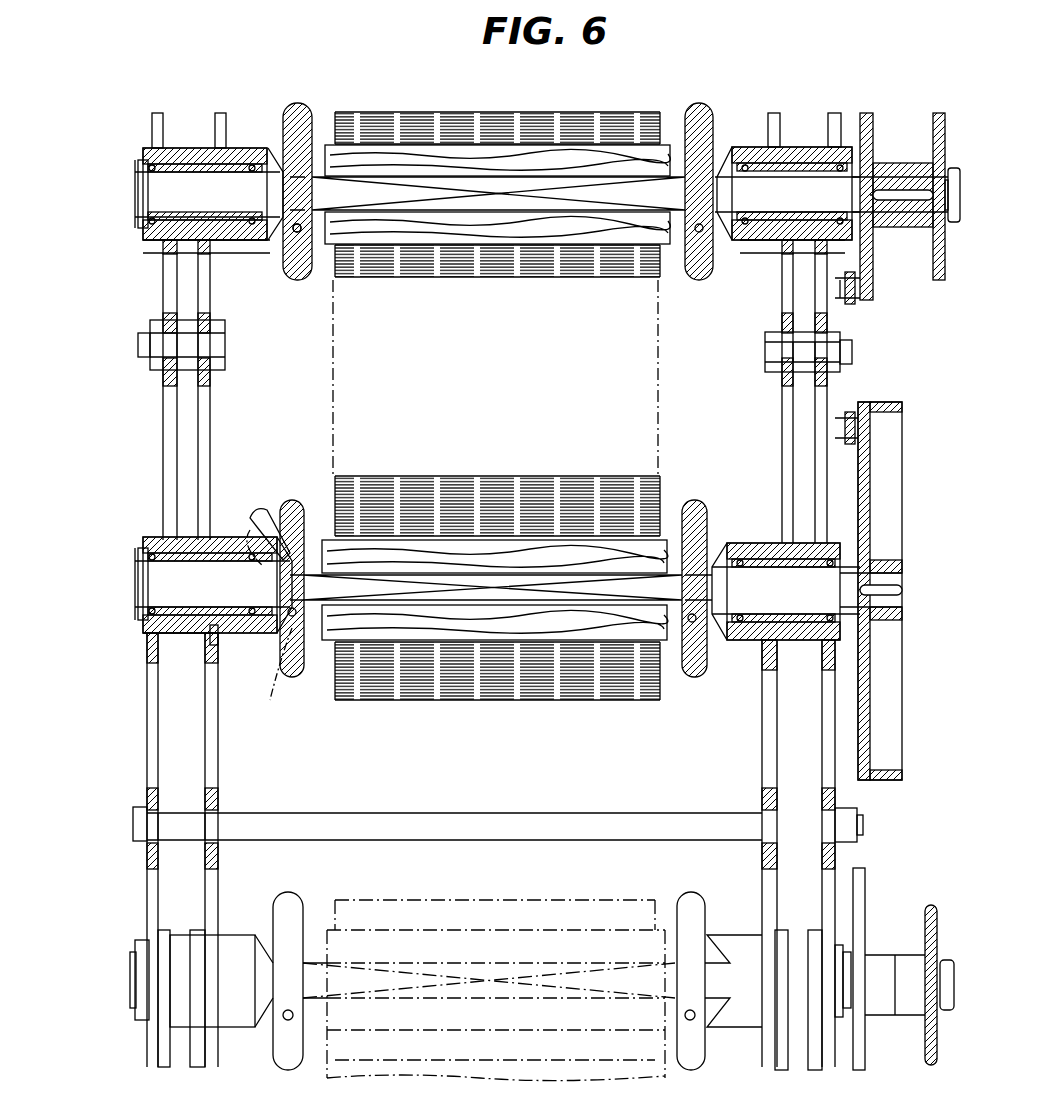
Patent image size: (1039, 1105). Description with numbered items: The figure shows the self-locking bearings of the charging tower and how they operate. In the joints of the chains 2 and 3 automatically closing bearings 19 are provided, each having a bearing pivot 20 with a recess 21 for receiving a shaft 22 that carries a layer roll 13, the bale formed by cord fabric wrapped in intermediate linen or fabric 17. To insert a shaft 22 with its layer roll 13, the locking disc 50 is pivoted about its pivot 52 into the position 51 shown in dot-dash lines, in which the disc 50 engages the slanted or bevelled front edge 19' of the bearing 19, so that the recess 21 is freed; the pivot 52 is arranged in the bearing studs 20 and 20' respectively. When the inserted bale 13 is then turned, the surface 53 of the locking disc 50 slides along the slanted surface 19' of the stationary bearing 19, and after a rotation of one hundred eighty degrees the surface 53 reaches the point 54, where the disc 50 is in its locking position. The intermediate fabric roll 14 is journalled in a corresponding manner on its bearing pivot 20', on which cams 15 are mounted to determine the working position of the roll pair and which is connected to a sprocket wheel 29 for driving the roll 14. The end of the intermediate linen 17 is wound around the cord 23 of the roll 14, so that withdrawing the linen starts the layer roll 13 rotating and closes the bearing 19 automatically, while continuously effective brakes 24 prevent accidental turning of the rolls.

The chain 2 is at (835, 113).
The chain 3 is at (220, 113).
The layer roll 13 is at (547, 488).
The intermediate fabric roll 14 is at (597, 262).
The cam 15 is at (952, 225).
The intermediate linen or fabric 17 is at (638, 383).
The automatically closing bearing 19 is at (497, 630).
The slanted or bevelled front edge 19' is at (525, 530).
The bearing pivot 20 is at (908, 572).
The bearing pivot 20' is at (900, 133).
The recess 21 is at (703, 566).
The shaft 22 is at (640, 592).
The cord or core 23 is at (672, 225).
The brake 24 is at (885, 435).
The sprocket wheel 29 is at (915, 258).
The locking disc 50 is at (298, 500).
The position of locking disc 51 is at (262, 510).
The pivot 52 is at (703, 232).
The surface of locking disc 53 is at (250, 530).
The point 54 is at (270, 700).